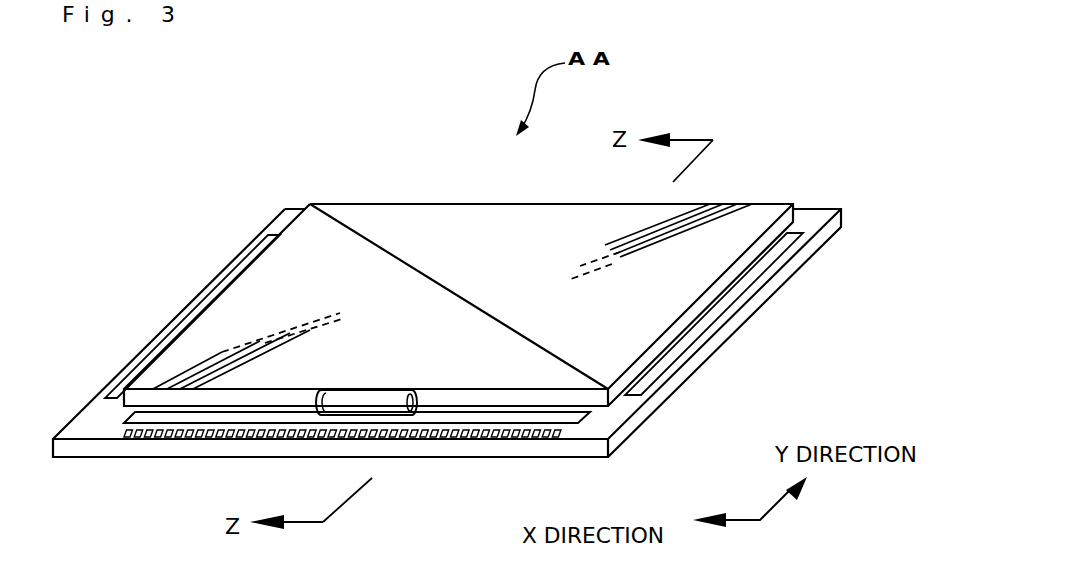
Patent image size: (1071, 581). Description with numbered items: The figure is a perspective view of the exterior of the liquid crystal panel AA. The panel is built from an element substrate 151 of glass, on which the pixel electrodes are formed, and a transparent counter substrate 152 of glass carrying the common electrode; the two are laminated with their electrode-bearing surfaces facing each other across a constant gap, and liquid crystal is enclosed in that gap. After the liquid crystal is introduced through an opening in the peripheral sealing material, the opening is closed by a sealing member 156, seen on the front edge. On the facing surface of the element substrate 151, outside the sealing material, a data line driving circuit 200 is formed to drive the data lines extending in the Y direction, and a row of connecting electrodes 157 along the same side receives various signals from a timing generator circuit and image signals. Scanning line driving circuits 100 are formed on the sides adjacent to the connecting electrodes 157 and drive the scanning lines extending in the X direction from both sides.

The scanning line driving circuit 100 is at (157, 345).
The element substrate 151 is at (789, 266).
The counter substrate 152 is at (675, 215).
The sealing member 156 is at (380, 403).
The connecting electrode 157 is at (562, 433).
The data line driving circuit 200 is at (590, 415).